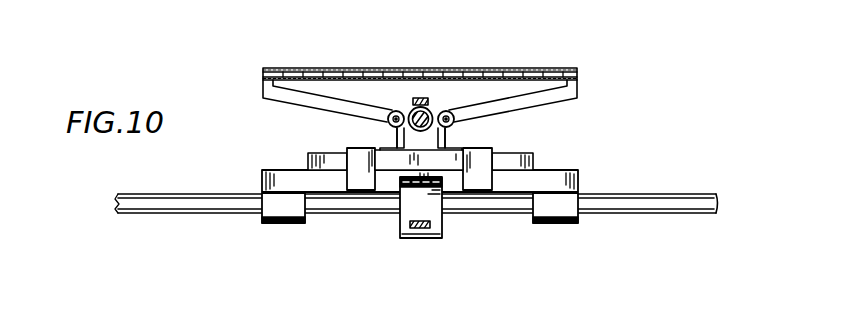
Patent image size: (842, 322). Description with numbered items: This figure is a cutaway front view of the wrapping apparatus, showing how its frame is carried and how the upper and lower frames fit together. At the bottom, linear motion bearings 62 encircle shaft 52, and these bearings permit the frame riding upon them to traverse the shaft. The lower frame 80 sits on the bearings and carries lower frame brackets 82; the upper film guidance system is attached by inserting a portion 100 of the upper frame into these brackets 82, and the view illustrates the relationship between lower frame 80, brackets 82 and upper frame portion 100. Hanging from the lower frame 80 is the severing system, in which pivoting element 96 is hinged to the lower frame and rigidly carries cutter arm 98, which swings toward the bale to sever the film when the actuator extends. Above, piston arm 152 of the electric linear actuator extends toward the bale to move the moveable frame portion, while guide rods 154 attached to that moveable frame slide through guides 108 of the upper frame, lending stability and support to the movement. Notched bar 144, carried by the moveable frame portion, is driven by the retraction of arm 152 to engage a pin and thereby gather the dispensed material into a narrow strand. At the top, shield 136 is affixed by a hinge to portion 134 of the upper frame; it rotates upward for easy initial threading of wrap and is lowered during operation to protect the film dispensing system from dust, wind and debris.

The shaft 52 is at (682, 212).
The linear motion bearing 62 is at (287, 224).
The lower frame 80 is at (572, 180).
The lower frame bracket 82 is at (353, 158).
The pivoting element 96 is at (406, 214).
The cutter arm 98 is at (423, 233).
The upper frame portion 100 is at (514, 162).
The guide 108 is at (388, 129).
The upper frame portion 134 is at (578, 87).
The shield 136 is at (501, 68).
The notched bar 144 is at (422, 104).
The piston arm 152 is at (412, 101).
The guide rod 154 is at (393, 112).